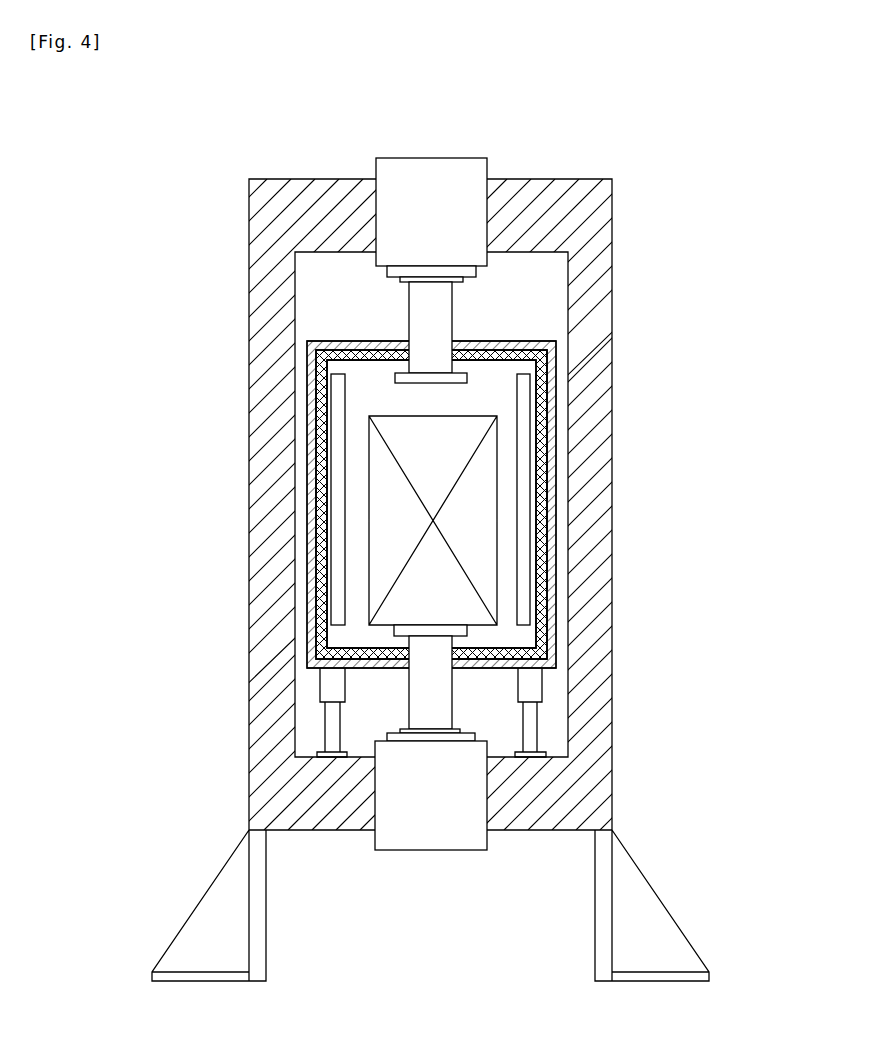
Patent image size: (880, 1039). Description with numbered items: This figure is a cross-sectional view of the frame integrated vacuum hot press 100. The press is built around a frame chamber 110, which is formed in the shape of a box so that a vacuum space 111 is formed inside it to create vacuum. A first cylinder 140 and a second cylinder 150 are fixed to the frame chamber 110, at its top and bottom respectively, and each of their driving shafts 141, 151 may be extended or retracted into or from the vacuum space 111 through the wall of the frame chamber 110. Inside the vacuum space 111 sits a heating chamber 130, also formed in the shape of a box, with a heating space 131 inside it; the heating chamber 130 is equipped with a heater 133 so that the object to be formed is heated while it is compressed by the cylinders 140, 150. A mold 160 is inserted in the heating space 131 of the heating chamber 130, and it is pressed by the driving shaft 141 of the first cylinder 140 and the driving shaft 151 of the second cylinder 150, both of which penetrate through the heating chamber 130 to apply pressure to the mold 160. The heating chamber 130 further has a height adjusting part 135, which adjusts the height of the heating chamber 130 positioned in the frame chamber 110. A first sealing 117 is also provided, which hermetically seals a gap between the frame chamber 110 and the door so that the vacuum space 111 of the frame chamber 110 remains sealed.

The frame integrated vacuum hot press 100 is at (180, 155).
The frame chamber 110 is at (262, 283).
The vacuum space 111 is at (340, 304).
The first sealing 117 is at (317, 437).
The heating chamber 130 is at (518, 341).
The heating space 131 is at (370, 395).
The heater 133 is at (340, 488).
The height adjusting part 135 is at (533, 683).
The first cylinder 140 is at (452, 175).
The driving shaft of the first cylinder 141 is at (443, 317).
The second cylinder 150 is at (438, 842).
The driving shaft of the second cylinder 151 is at (420, 698).
The mold 160 is at (473, 520).